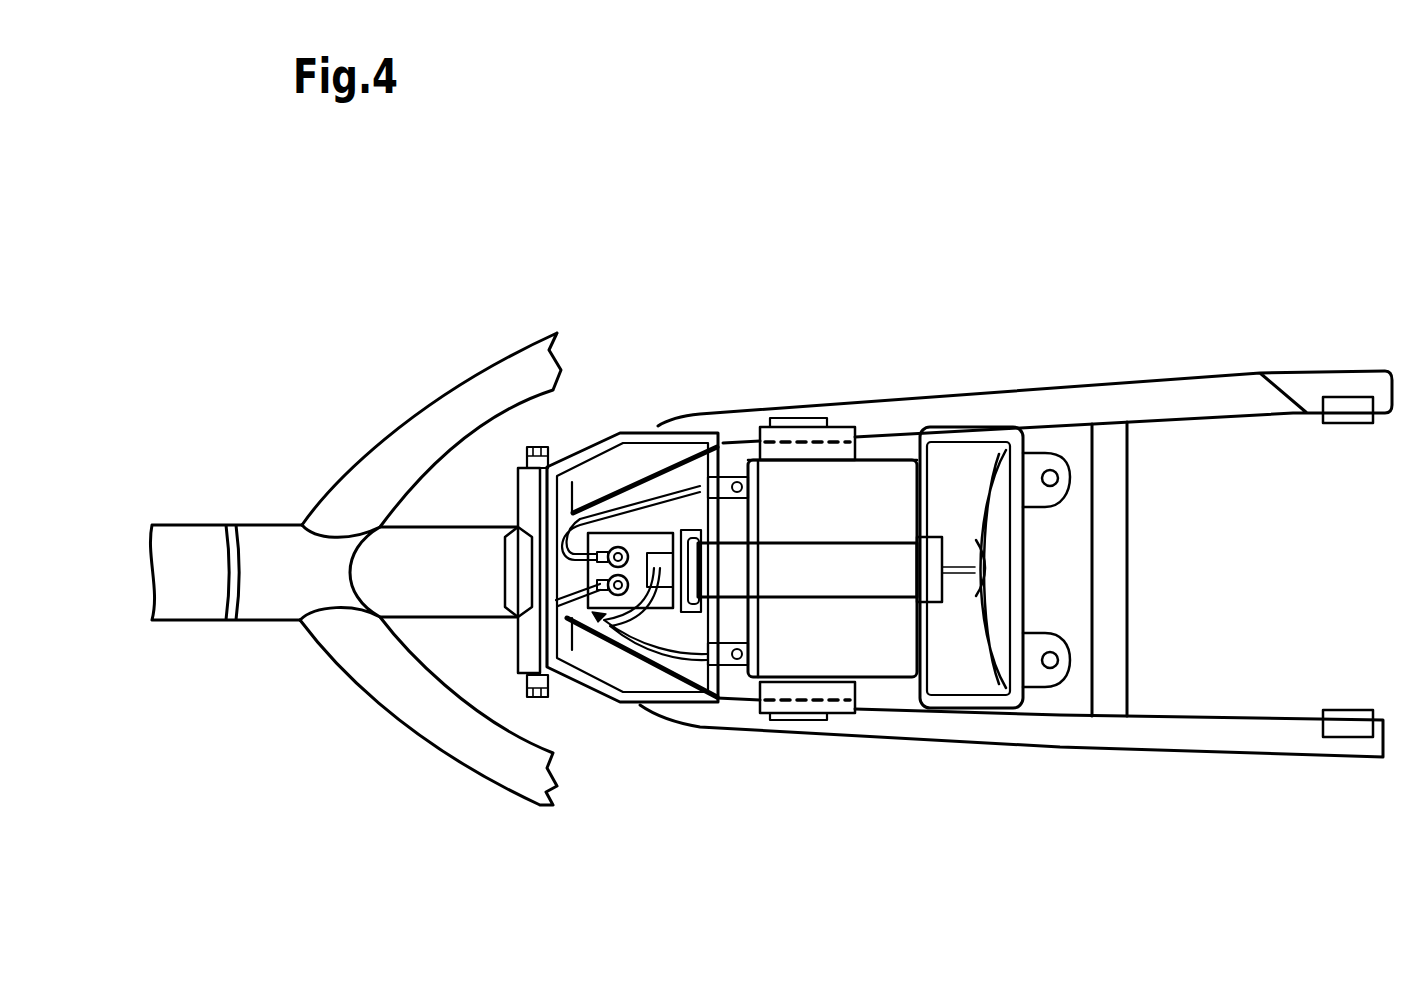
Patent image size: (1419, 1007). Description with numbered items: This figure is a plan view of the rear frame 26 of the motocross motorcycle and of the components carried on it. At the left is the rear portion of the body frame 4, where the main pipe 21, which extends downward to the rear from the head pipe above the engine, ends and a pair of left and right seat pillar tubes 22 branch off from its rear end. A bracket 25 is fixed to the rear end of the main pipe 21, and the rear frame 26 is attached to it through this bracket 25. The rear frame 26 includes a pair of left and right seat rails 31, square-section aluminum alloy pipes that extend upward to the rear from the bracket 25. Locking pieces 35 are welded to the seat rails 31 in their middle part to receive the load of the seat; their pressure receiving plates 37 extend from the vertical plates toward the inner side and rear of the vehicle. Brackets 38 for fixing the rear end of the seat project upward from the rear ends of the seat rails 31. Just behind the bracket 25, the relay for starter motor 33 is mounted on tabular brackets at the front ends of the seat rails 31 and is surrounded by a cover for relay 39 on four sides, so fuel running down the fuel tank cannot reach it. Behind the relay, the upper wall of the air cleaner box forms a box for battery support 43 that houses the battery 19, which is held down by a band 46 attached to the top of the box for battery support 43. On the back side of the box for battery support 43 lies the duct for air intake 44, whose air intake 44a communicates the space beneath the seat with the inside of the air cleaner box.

The body frame 4 is at (390, 718).
The battery 19 is at (878, 650).
The main pipe 21 is at (206, 601).
The seat pillar tubes 22 is at (471, 377).
The bracket 25 is at (528, 502).
The rear frame 26 is at (937, 745).
The seat rails 31 is at (1123, 380).
The relay for starter motor 33 is at (630, 548).
The locking pieces 35 is at (745, 440).
The pressure receiving plates 37 is at (800, 450).
The brackets 38 is at (1350, 425).
The cover for relay 39 is at (598, 445).
The box for battery support 43 is at (872, 460).
The duct for air intake 44 is at (1025, 570).
The air intake 44a is at (965, 478).
The band 46 is at (887, 570).